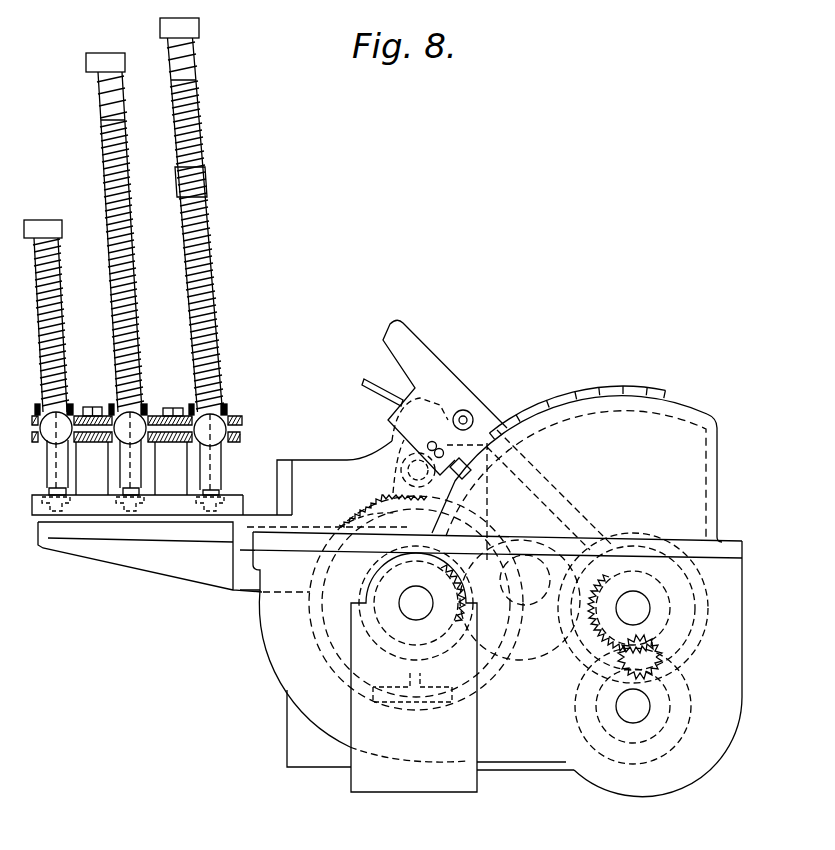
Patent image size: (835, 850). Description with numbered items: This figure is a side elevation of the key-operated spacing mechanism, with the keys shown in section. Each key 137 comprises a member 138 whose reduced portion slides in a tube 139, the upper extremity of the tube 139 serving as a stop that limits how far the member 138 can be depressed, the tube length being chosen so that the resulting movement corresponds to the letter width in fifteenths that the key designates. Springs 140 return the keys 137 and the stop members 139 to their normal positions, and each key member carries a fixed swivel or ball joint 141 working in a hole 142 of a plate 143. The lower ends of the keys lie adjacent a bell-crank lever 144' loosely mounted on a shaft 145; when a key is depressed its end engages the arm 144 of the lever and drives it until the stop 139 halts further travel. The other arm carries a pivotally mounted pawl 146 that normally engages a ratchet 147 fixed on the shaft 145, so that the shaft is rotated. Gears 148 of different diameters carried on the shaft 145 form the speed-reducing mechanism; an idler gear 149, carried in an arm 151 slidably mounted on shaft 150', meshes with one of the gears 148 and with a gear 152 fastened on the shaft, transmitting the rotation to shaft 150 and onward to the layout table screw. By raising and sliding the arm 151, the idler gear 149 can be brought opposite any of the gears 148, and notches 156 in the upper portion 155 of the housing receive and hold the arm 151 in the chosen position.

The key 137 is at (148, 26).
The member 138 is at (196, 64).
The tube 139 is at (210, 302).
The spring 140 is at (188, 253).
The swivel or ball joint 141 is at (195, 420).
The hole 142 is at (228, 417).
The plate 143 is at (242, 424).
The bell-crank lever arm 144 is at (150, 561).
The bell-crank lever 144' is at (416, 603).
The shaft 145 is at (420, 613).
The pawl 146 is at (397, 470).
The ratchet 147 is at (362, 516).
The gear 148 is at (437, 580).
The idler gear 149 is at (572, 517).
The shaft 150 is at (679, 706).
The shaft 150' is at (650, 608).
The arm 151 is at (487, 420).
The gear 152 is at (678, 653).
The upper portion of the housing 155 is at (693, 408).
The notch 156 is at (637, 383).